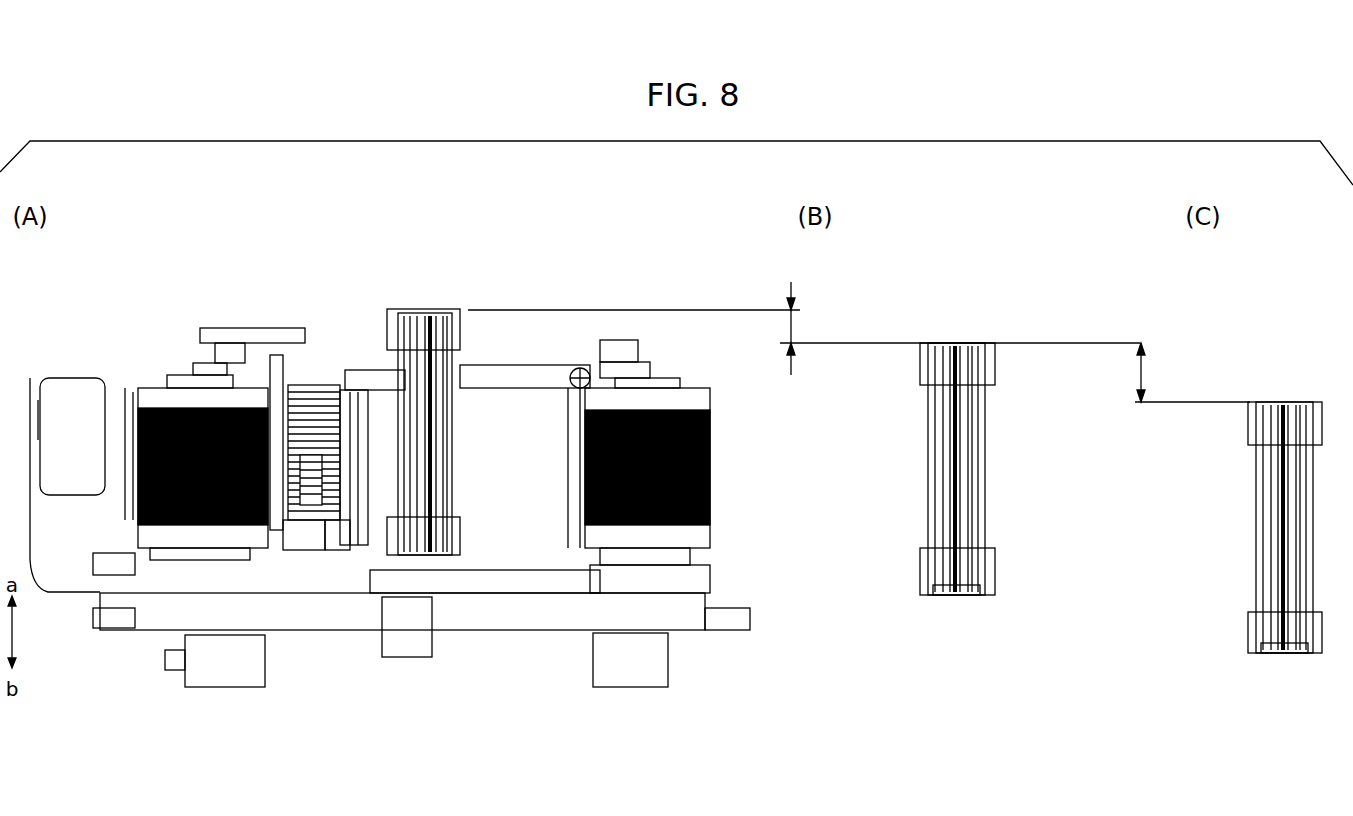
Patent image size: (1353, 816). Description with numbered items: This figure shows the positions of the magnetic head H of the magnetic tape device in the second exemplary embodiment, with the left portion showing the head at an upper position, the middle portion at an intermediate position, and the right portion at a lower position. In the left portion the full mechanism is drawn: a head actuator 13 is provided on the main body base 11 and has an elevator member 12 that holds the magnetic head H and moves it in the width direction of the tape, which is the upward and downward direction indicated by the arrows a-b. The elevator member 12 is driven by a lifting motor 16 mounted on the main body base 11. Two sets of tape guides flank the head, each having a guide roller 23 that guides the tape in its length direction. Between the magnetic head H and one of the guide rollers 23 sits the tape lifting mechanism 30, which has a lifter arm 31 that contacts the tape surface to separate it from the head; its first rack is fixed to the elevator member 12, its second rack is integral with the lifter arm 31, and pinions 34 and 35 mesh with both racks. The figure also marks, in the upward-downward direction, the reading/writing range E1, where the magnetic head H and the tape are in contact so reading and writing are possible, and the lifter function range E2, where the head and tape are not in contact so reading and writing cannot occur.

The main body base 11 is at (472, 625).
The elevator member 12 is at (345, 362).
The head actuator 13 is at (528, 334).
The lifting motor 16 is at (73, 395).
The guide roller 23 is at (126, 432).
The tape lifting mechanism 30 is at (330, 348).
The lifter arm 31 is at (352, 552).
The pinion 34 is at (305, 372).
The pinion 35 is at (305, 550).
The magnetic head H is at (423, 308).
The reading/writing range E1 is at (796, 328).
The lifter function range E2 is at (1148, 376).